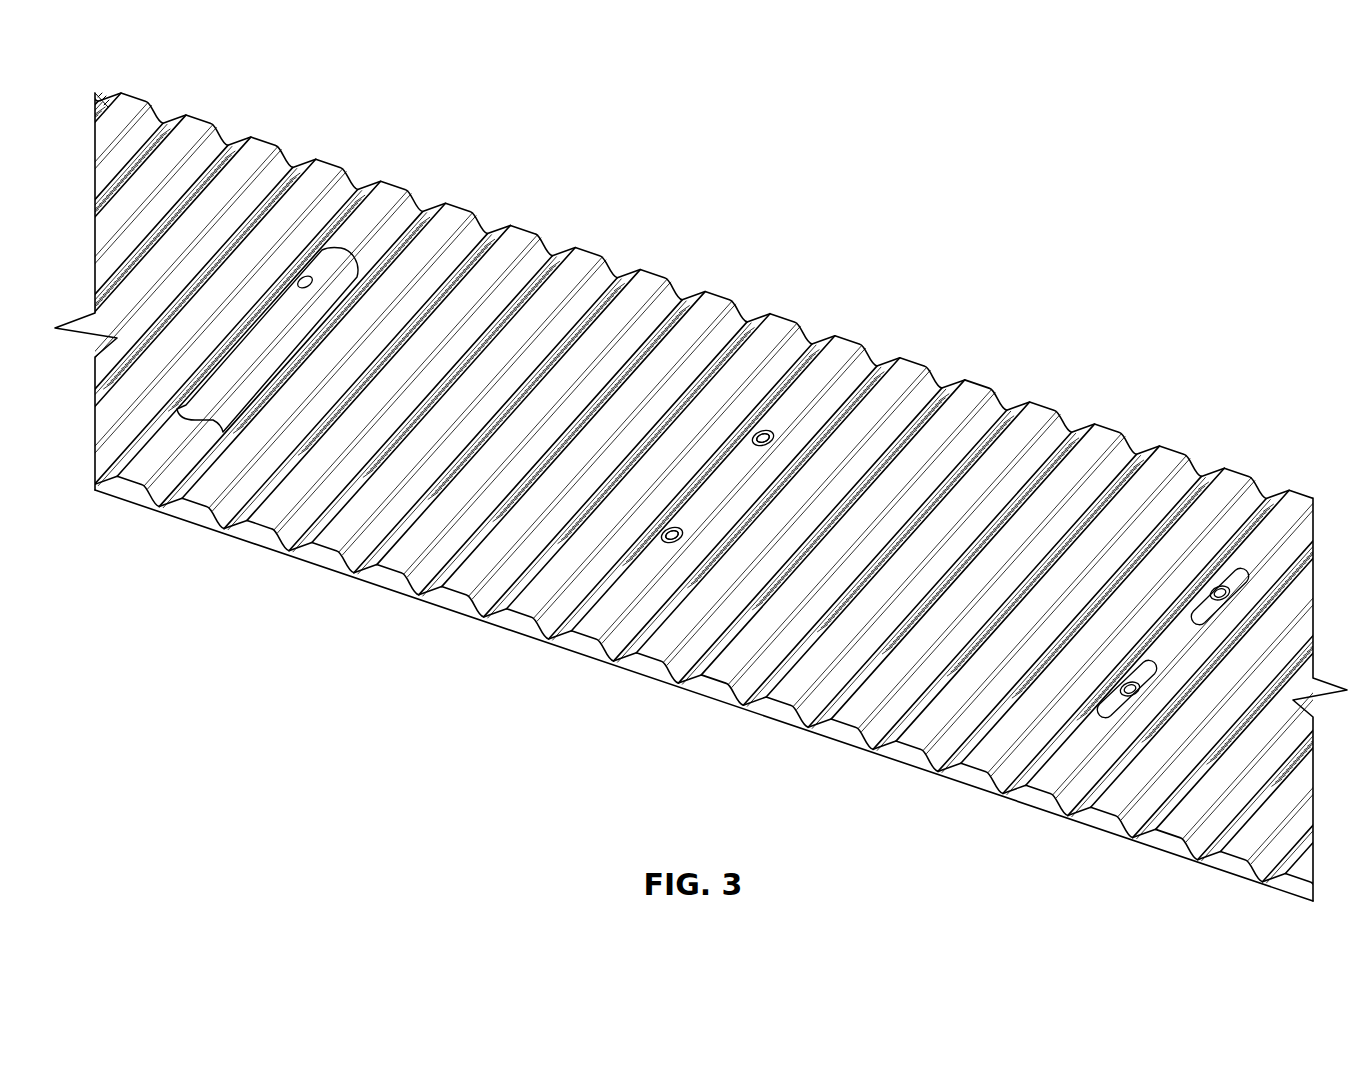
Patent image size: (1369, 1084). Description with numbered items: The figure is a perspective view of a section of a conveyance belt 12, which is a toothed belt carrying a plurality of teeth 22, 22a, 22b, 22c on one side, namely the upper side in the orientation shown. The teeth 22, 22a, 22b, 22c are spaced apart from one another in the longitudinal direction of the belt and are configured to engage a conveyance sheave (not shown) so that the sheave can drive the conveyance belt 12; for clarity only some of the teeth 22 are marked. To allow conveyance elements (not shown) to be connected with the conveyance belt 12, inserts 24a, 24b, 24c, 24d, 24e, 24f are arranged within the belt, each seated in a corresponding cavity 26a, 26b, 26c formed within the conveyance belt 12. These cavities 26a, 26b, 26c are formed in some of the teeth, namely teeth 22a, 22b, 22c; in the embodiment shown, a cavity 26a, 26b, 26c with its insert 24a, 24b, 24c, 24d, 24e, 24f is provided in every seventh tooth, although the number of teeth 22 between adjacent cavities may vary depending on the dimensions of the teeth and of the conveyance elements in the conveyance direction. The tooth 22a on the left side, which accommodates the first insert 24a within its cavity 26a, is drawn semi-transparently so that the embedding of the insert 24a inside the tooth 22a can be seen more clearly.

The conveyance belt 12 is at (988, 244).
The teeth 22 is at (778, 325).
The tooth 22a is at (358, 196).
The tooth 22b is at (843, 350).
The tooth 22c is at (1042, 780).
The insert 24a is at (337, 260).
The insert 24b is at (700, 512).
The insert 24c is at (1240, 580).
The insert 24d is at (763, 438).
The insert 24e is at (672, 535).
The insert 24f is at (763, 438).
The cavity 26a is at (178, 430).
The cavity 26b is at (716, 463).
The cavity 26c is at (1217, 561).